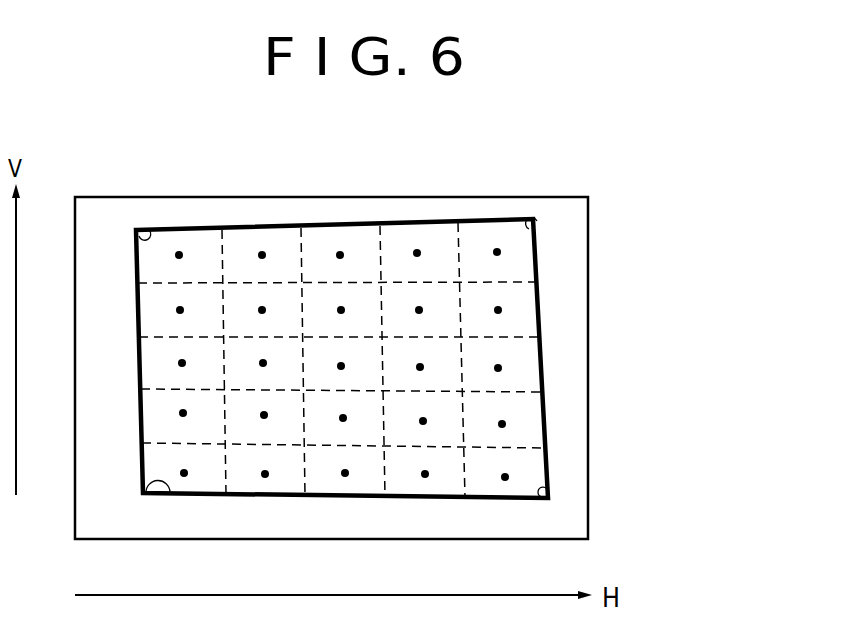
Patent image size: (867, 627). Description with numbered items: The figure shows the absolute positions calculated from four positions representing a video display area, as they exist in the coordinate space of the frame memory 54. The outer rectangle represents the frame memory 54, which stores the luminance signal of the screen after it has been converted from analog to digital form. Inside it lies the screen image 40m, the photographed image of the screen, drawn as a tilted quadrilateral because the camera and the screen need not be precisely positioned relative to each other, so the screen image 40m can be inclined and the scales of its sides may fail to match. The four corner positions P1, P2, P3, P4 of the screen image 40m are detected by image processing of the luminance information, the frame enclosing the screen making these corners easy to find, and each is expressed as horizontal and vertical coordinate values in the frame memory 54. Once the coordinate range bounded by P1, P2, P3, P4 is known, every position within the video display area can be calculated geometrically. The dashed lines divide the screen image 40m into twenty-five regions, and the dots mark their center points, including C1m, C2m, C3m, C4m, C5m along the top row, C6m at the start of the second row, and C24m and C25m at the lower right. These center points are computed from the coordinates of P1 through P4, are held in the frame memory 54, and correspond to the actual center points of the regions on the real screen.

The frame memory 54 is at (589, 243).
The screen image 40m is at (530, 320).
The first corner position P1 is at (149, 229).
The second corner position P2 is at (537, 221).
The third corner position P3 is at (170, 492).
The fourth corner position P4 is at (548, 492).
The center point of first region C1m is at (179, 251).
The center point of second region C2m is at (262, 251).
The center point of third region C3m is at (340, 251).
The center point of fourth region C4m is at (417, 249).
The center point of fifth region C5m is at (497, 248).
The center point of sixth region C6m is at (177, 311).
The center point of twenty-fourth region C24m is at (425, 478).
The center point of twenty-fifth region C25m is at (508, 477).